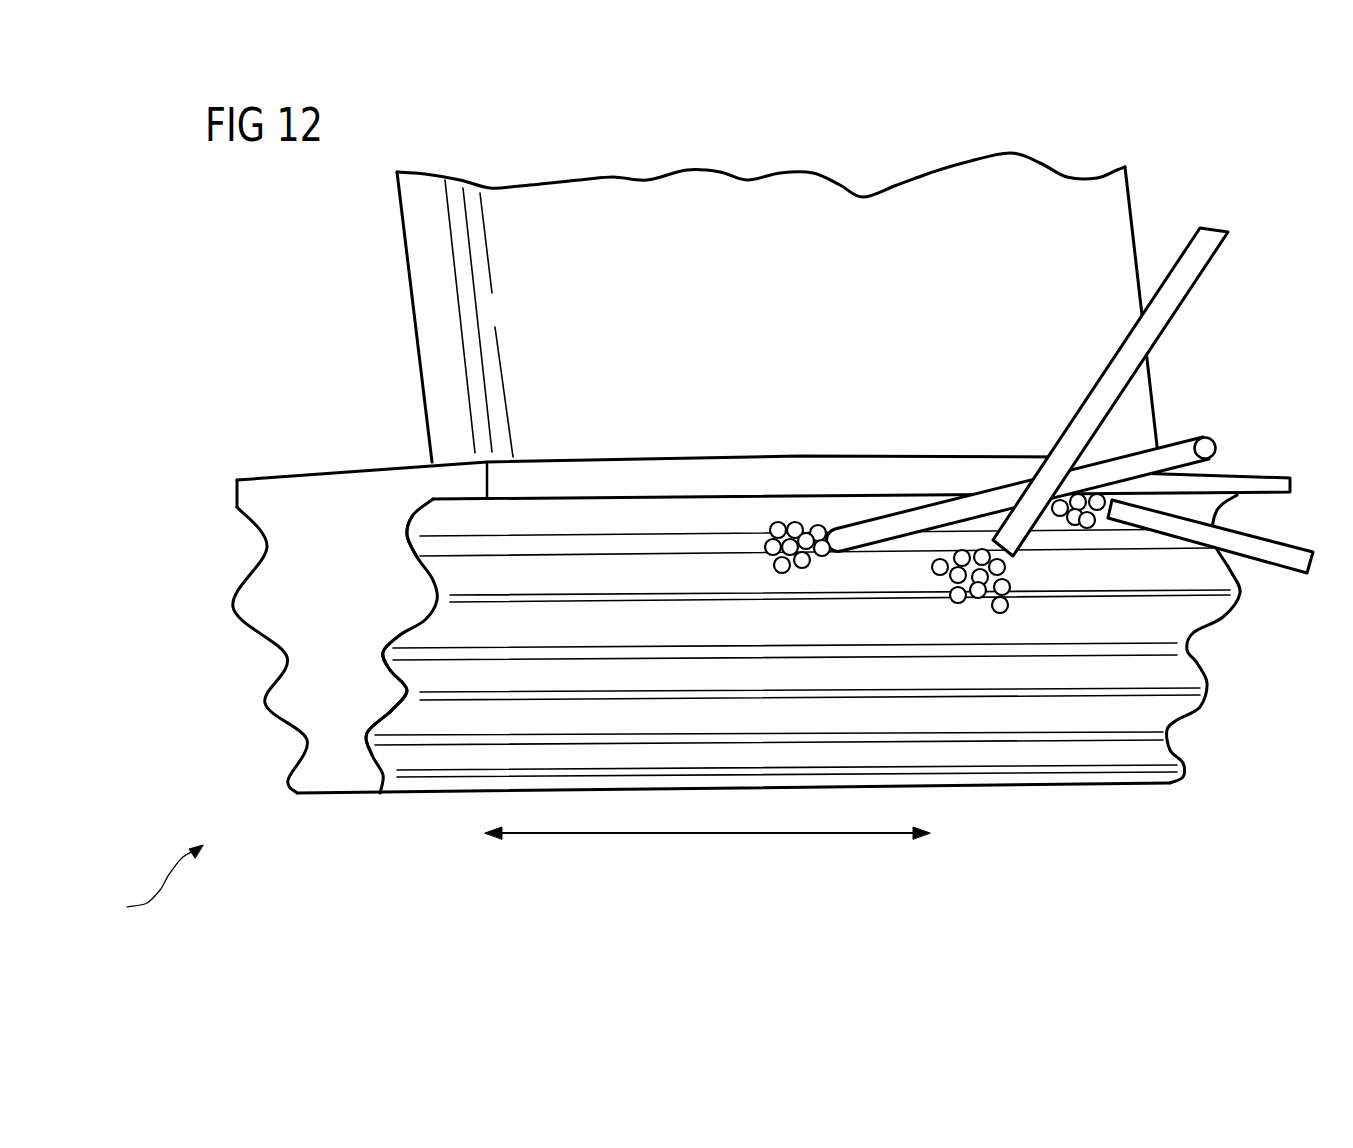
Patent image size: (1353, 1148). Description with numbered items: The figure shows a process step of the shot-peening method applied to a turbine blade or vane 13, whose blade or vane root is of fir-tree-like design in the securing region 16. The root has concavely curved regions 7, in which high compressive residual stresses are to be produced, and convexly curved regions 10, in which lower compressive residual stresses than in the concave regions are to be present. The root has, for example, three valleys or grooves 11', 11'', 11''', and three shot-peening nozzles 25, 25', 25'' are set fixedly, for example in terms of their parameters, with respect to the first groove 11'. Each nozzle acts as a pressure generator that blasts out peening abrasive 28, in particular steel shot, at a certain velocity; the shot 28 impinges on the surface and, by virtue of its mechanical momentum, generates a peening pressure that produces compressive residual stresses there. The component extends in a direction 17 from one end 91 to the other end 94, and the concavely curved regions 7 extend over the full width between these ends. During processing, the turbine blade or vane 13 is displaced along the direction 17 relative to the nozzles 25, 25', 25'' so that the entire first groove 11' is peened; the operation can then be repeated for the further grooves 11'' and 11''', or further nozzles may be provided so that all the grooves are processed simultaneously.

The concavely curved region 7 is at (407, 527).
The convexly curved region 10 is at (438, 598).
The first groove 11' is at (399, 473).
The second groove 11'' is at (319, 735).
The third groove 11''' is at (352, 792).
The turbine blade or vane 13 is at (147, 887).
The securing region 16 is at (285, 537).
The direction 17 is at (718, 840).
The shot-peening nozzle 25 is at (1021, 462).
The second shot-peening nozzle 25' is at (1146, 392).
The third shot-peening nozzle 25'' is at (1214, 597).
The peening abrasive 28 is at (800, 525).
The end 91 is at (397, 627).
The end 94 is at (1197, 630).